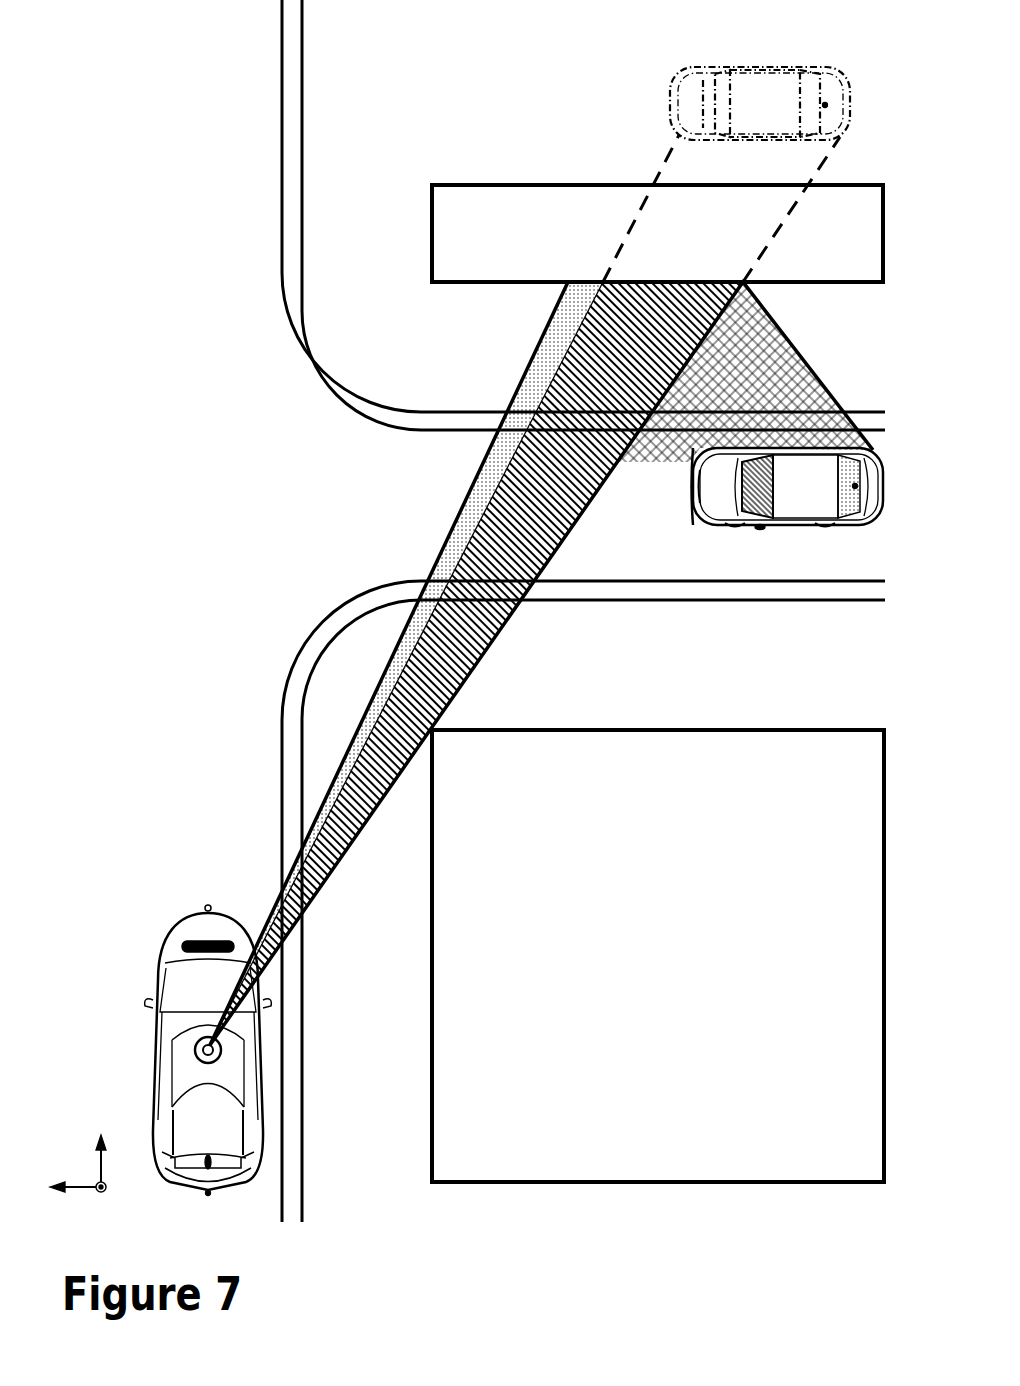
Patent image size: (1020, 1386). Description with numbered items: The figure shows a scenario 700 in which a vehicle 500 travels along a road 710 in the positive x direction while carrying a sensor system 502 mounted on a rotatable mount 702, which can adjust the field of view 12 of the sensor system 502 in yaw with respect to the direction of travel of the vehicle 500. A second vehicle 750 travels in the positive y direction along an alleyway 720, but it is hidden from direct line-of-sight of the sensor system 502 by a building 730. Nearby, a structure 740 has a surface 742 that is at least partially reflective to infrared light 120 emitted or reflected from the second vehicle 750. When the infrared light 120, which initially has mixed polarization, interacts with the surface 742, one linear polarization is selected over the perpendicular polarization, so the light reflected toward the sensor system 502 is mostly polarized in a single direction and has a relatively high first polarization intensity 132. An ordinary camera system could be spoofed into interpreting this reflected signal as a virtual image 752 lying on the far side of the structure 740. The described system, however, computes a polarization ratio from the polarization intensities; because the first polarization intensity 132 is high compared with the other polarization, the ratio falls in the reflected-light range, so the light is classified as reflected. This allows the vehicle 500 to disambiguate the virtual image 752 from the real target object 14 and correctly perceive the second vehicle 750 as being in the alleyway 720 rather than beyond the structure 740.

The scenario 700 is at (147, 118).
The virtual image 752 is at (672, 93).
The structure 740 is at (550, 248).
The surface 742 is at (787, 284).
The infrared light 120 is at (808, 370).
The first polarization intensity 132 is at (553, 445).
The field of view 12 is at (443, 554).
The alleyway 720 is at (654, 546).
The target object 14 is at (857, 525).
The second vehicle 750 is at (738, 525).
The building 730 is at (616, 922).
The road 710 is at (222, 787).
The vehicle 500 is at (188, 913).
The rotatable mount 702 is at (222, 1052).
The sensor system 502 is at (222, 1058).